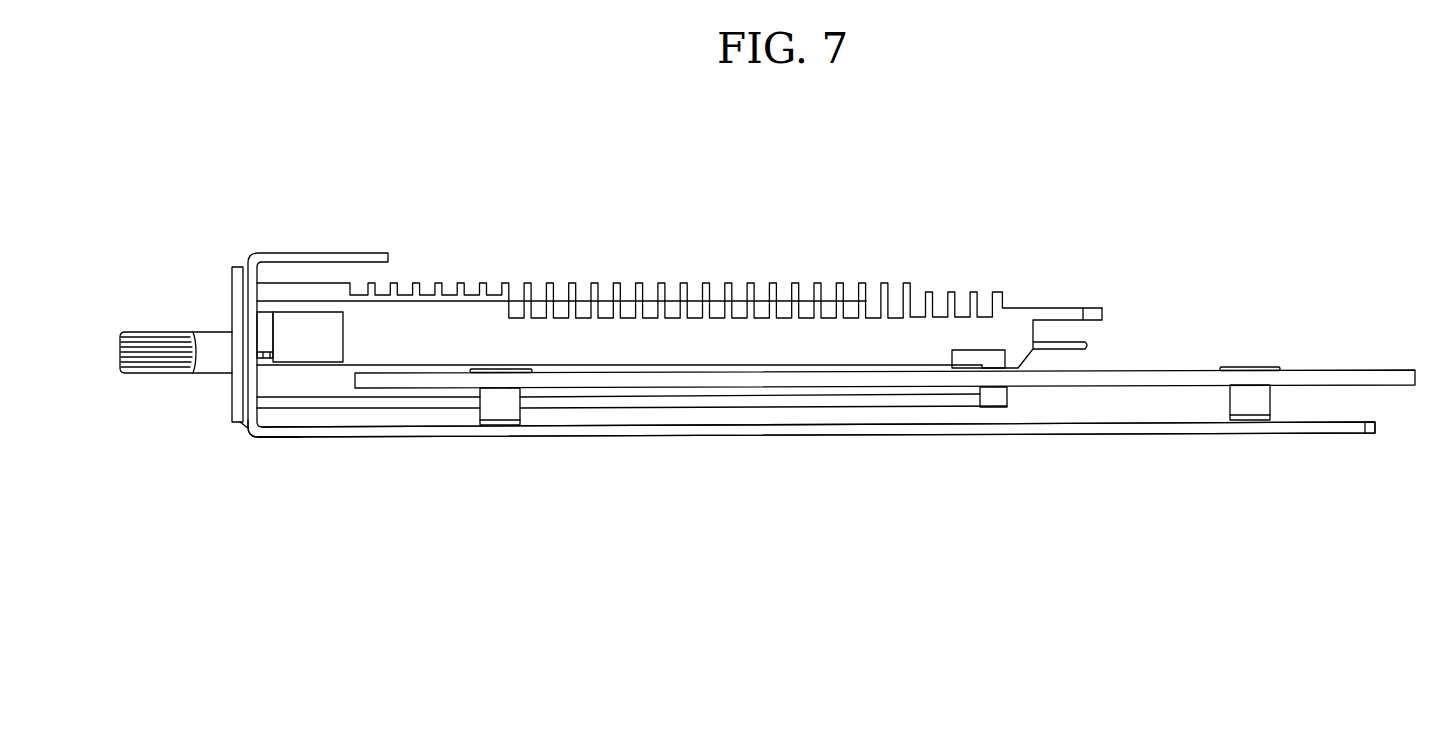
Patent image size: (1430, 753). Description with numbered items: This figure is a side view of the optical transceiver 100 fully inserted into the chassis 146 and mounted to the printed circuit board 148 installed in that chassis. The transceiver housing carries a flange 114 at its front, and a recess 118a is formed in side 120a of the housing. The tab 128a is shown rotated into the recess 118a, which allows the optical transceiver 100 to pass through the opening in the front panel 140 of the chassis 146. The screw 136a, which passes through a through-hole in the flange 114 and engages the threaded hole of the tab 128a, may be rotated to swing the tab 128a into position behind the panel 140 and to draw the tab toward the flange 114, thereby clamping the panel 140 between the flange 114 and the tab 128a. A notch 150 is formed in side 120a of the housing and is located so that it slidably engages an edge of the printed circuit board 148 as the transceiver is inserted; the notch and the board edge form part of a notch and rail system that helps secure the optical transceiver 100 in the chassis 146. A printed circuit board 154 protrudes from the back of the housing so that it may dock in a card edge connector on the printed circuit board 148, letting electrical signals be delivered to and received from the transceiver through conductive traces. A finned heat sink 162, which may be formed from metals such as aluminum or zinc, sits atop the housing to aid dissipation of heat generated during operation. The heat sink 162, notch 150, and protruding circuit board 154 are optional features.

The optical transceiver 100 is at (641, 219).
The flange 114 is at (236, 266).
The recess 118a is at (265, 323).
The side of housing 120a is at (378, 352).
The tab 128a is at (338, 327).
The screw 136a is at (198, 376).
The front panel 140 is at (240, 423).
The chassis 146 is at (790, 437).
The printed circuit board 148 is at (1307, 370).
The notch 150 is at (307, 388).
The printed circuit board 154 is at (1087, 338).
The finned heat sink 162 is at (683, 283).